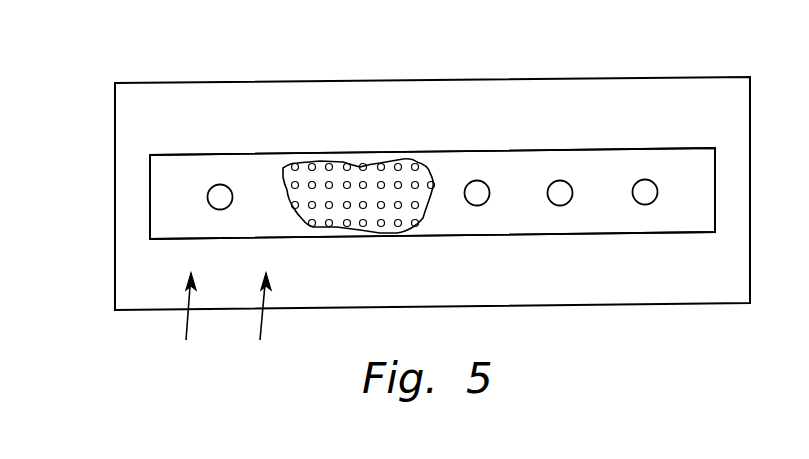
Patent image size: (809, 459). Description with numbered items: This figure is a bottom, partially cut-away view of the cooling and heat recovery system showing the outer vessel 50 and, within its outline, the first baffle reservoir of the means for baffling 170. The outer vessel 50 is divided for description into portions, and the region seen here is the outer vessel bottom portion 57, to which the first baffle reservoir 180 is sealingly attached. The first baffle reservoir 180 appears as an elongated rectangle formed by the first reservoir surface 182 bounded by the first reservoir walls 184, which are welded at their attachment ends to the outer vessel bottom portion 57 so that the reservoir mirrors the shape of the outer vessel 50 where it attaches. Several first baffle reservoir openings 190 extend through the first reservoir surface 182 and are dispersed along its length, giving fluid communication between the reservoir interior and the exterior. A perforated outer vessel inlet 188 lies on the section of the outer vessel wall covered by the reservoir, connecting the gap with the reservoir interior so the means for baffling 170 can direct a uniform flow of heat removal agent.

The outer vessel 50 is at (687, 76).
The outer vessel bottom portion 57 is at (738, 270).
The means for baffling 170 is at (181, 319).
The first baffle reservoir 180 is at (256, 319).
The first reservoir surface 182 is at (683, 222).
The first reservoir walls 184 is at (276, 150).
The outer vessel inlet 188 is at (363, 185).
The first baffle reservoir opening 190 is at (217, 184).